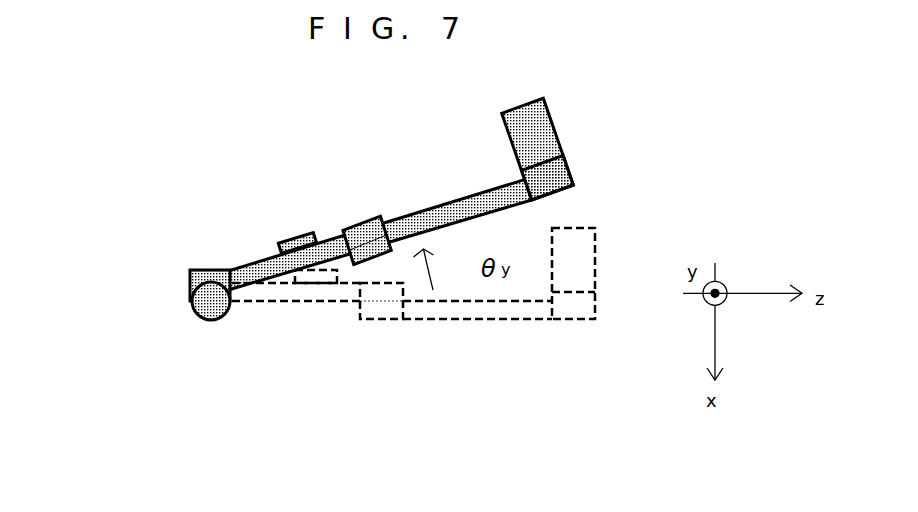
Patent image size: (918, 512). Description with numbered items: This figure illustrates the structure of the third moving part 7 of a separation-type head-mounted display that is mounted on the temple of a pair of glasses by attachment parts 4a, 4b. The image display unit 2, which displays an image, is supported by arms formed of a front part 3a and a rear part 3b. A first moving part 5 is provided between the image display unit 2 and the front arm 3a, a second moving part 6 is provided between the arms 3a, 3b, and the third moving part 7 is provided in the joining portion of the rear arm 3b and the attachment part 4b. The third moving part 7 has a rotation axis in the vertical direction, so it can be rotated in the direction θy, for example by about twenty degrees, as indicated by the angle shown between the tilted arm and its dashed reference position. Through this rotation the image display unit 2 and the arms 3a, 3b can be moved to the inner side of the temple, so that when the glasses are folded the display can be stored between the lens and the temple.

The image display unit 2 is at (548, 132).
The first moving part 5 is at (556, 180).
The front part of the arm 3a is at (428, 230).
The rear part of the arm 3b is at (258, 265).
The attachment part 4a is at (312, 228).
The attachment part 4b is at (207, 270).
The second moving part 6 is at (358, 218).
The third moving part 7 is at (200, 308).